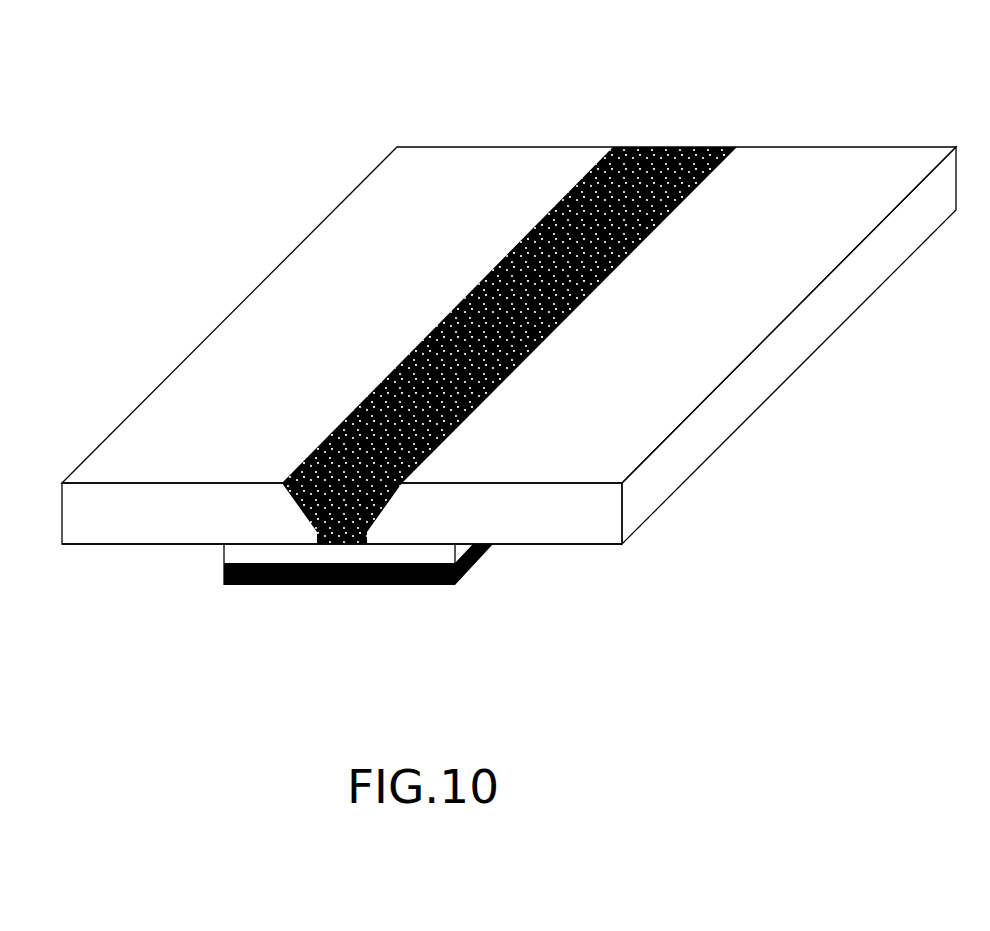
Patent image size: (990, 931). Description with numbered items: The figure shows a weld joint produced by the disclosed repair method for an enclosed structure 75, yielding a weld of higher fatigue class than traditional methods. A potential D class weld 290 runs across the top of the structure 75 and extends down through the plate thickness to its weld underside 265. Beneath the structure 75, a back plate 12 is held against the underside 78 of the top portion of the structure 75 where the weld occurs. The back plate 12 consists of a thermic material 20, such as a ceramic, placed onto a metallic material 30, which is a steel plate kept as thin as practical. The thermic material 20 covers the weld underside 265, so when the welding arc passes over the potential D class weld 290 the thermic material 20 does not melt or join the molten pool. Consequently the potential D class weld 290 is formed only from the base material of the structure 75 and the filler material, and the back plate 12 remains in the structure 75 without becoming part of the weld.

The structure 75 is at (572, 508).
The underside 78 is at (592, 544).
The potential D class weld 290 is at (667, 167).
The weld underside 265 is at (345, 542).
The thermic material 20 is at (233, 558).
The metallic material 30 is at (468, 563).
The back plate 12 is at (454, 597).